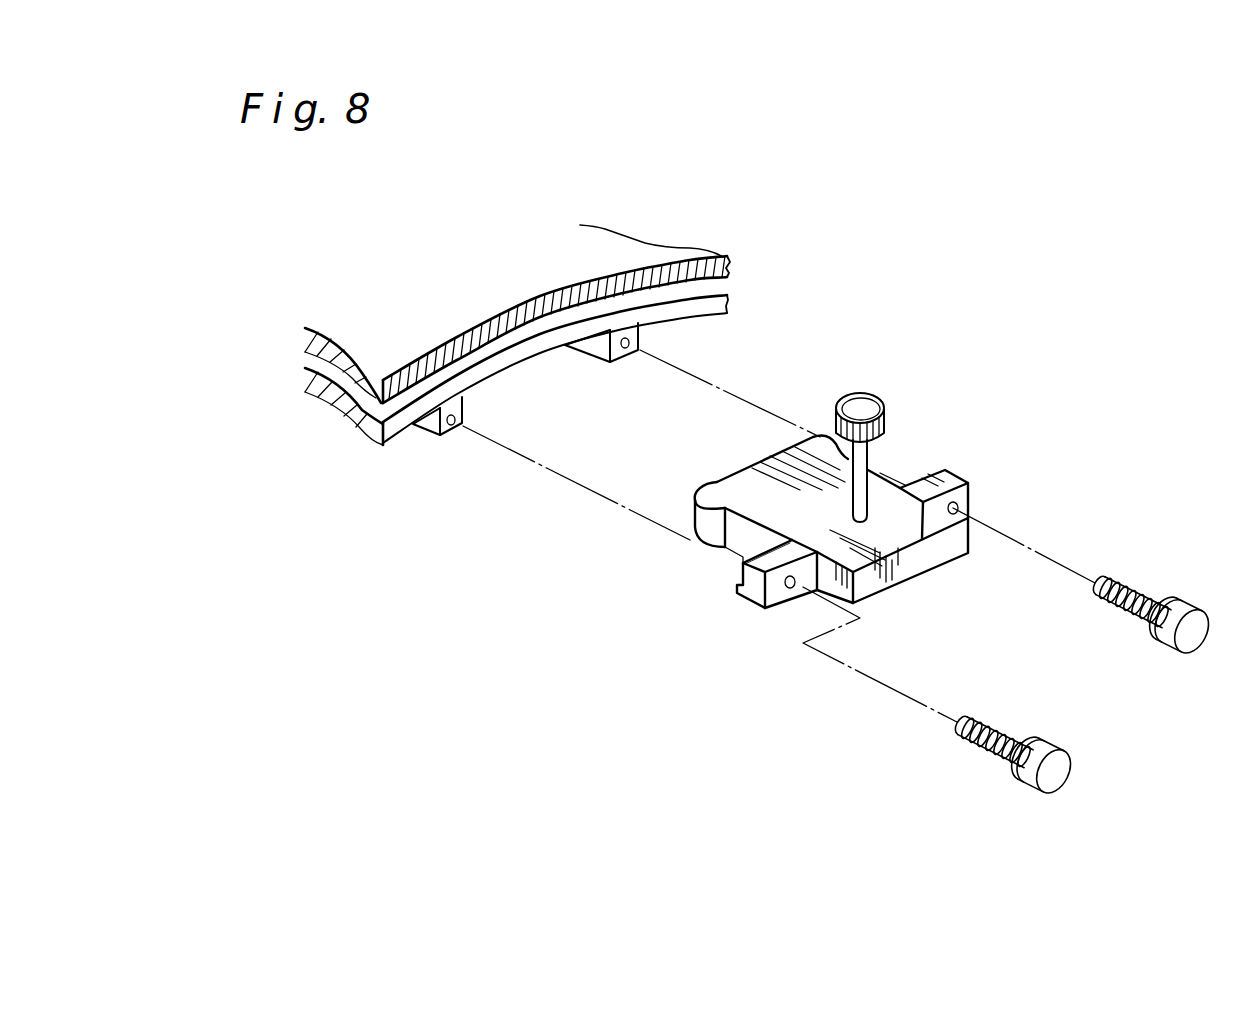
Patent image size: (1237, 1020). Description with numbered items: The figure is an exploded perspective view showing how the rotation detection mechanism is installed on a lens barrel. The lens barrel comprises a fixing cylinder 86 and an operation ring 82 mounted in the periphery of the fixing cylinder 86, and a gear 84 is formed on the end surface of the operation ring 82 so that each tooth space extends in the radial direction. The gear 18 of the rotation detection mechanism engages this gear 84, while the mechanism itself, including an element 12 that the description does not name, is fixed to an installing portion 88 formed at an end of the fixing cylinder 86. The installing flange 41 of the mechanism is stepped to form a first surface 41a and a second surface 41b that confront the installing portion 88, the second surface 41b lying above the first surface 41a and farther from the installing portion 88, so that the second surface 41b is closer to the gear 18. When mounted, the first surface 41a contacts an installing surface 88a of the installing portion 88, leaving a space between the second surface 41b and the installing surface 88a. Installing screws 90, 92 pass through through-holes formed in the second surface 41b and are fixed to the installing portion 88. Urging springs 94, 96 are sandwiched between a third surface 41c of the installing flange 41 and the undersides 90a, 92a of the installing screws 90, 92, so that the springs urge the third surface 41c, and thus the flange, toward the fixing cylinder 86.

The base body 12 is at (865, 452).
The gear 18 is at (886, 415).
The installing flange 41 is at (727, 613).
The first surface 41a is at (735, 590).
The second surface 41b is at (738, 567).
The third surface 41c is at (802, 590).
The operation ring 82 is at (532, 317).
The gear 84 is at (688, 256).
The fixing cylinder 86 is at (695, 308).
The installing portion 88 is at (526, 410).
The installing surface 88a is at (462, 417).
The installing screw 90 is at (1013, 779).
The underside of installing screw 90a is at (1041, 765).
The installing screw 92 is at (1157, 632).
The underside of installing screw 92a is at (1128, 615).
The urging spring 94 is at (992, 740).
The urging spring 96 is at (1130, 600).